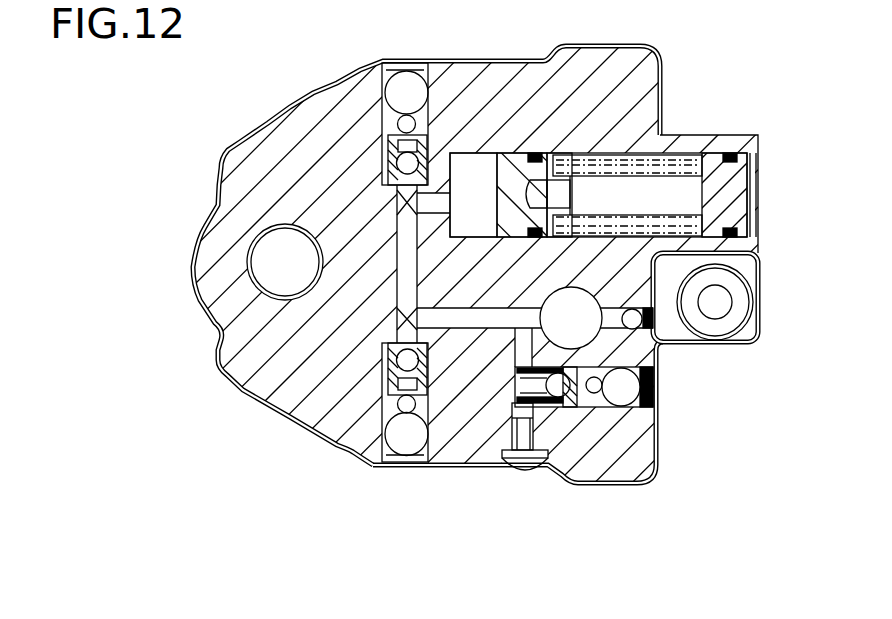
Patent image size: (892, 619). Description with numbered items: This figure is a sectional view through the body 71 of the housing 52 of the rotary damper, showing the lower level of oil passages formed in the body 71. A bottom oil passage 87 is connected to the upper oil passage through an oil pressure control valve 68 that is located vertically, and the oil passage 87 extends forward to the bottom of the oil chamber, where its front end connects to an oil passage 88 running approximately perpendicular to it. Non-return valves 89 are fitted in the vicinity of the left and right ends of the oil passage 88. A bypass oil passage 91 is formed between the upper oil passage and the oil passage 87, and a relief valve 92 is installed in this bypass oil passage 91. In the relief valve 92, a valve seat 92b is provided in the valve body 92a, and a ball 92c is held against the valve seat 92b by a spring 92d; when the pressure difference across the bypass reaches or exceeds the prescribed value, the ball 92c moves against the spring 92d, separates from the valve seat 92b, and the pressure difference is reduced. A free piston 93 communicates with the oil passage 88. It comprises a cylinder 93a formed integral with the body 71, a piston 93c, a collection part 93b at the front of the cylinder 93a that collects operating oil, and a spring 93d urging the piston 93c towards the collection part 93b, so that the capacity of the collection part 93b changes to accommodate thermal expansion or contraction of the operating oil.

The housing 52 is at (720, 62).
The body 71 is at (313, 127).
The bottom oil passage 87 is at (490, 395).
The oil passage 88 is at (403, 275).
The non-return valves 89 is at (385, 150).
The bypass oil passage 91 is at (520, 347).
The oil pressure control valve 68 is at (575, 290).
The relief valve 92 is at (590, 408).
The valve body 92a is at (558, 392).
The valve seat 92b is at (557, 398).
The ball 92c is at (573, 408).
The spring 92d is at (515, 385).
The free piston 93 is at (725, 134).
The cylinder 93a is at (607, 175).
The collection part 93b is at (477, 160).
The piston 93c is at (513, 163).
The spring 93d is at (677, 170).